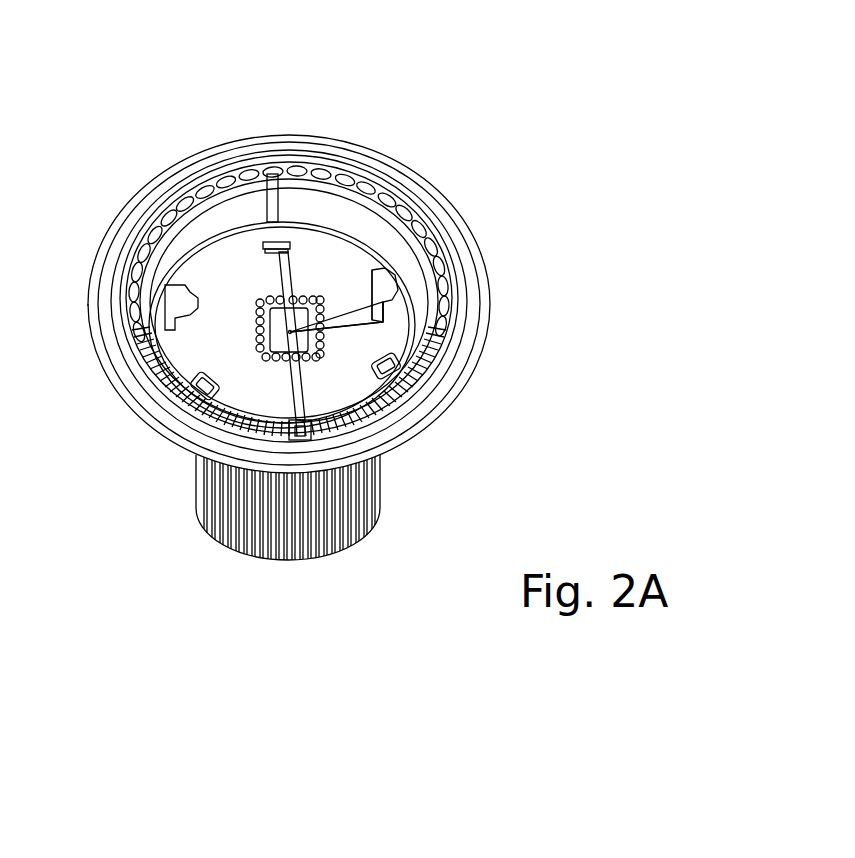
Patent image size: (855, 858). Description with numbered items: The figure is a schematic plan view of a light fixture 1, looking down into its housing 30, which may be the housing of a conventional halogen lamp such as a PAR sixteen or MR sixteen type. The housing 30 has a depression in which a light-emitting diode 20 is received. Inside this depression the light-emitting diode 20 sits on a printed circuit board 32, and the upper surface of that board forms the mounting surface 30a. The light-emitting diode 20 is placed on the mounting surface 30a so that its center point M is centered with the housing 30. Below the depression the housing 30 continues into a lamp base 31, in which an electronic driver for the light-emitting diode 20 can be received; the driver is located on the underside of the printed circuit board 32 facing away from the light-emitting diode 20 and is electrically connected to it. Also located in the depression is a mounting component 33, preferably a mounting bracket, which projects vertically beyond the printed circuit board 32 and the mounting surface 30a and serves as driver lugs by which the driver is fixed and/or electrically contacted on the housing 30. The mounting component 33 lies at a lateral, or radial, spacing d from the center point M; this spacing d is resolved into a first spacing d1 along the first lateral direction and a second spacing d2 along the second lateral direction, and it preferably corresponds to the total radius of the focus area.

The light fixture 1 is at (432, 98).
The light-emitting diode 20 is at (272, 328).
The housing 30 is at (412, 173).
The mounting surface 30a is at (327, 257).
The lamp base 31 is at (372, 498).
The printed circuit board 32 is at (395, 332).
The mounting component 33 is at (385, 290).
The lateral spacing d is at (345, 312).
The first spacing d1 is at (383, 322).
The second spacing d2 is at (290, 332).
The center point M is at (290, 332).